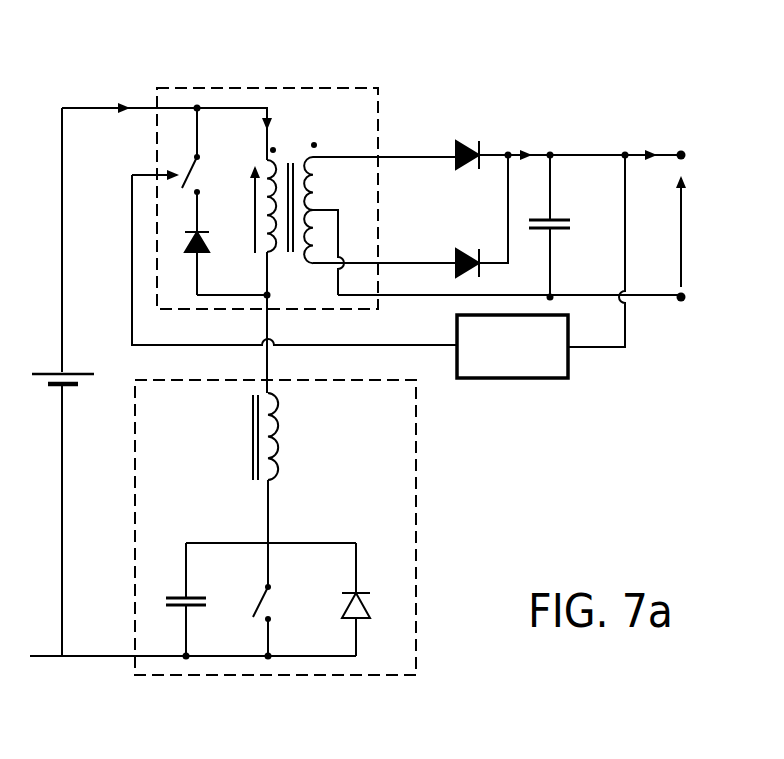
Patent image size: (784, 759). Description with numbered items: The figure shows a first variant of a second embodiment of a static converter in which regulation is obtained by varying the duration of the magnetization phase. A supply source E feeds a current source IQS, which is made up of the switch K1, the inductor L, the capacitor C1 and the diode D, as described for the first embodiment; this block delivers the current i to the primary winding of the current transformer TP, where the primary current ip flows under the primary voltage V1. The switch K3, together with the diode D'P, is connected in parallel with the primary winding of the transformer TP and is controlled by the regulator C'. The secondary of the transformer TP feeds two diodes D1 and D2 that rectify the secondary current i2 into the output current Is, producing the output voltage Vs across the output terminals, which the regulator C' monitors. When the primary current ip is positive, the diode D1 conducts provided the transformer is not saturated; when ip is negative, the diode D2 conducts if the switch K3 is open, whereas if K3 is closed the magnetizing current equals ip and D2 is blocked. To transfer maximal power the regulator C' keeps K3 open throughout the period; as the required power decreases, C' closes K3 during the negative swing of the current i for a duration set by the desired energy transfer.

The current transformer TP is at (267, 178).
The switch K3 is at (209, 170).
The diode D'P is at (215, 258).
The primary voltage V1 is at (243, 210).
The primary current ip is at (295, 130).
The current i is at (137, 83).
The diode D1 is at (466, 137).
The diode D2 is at (466, 251).
The secondary current i2 is at (527, 137).
The output current Is is at (654, 136).
The output voltage Vs is at (698, 232).
The regulator C' is at (512, 346).
The supply voltage source E is at (63, 364).
The inductor L is at (280, 436).
The current source IQS is at (295, 527).
The capacitor C1 is at (194, 599).
The switch K1 is at (280, 599).
The diode D is at (371, 599).